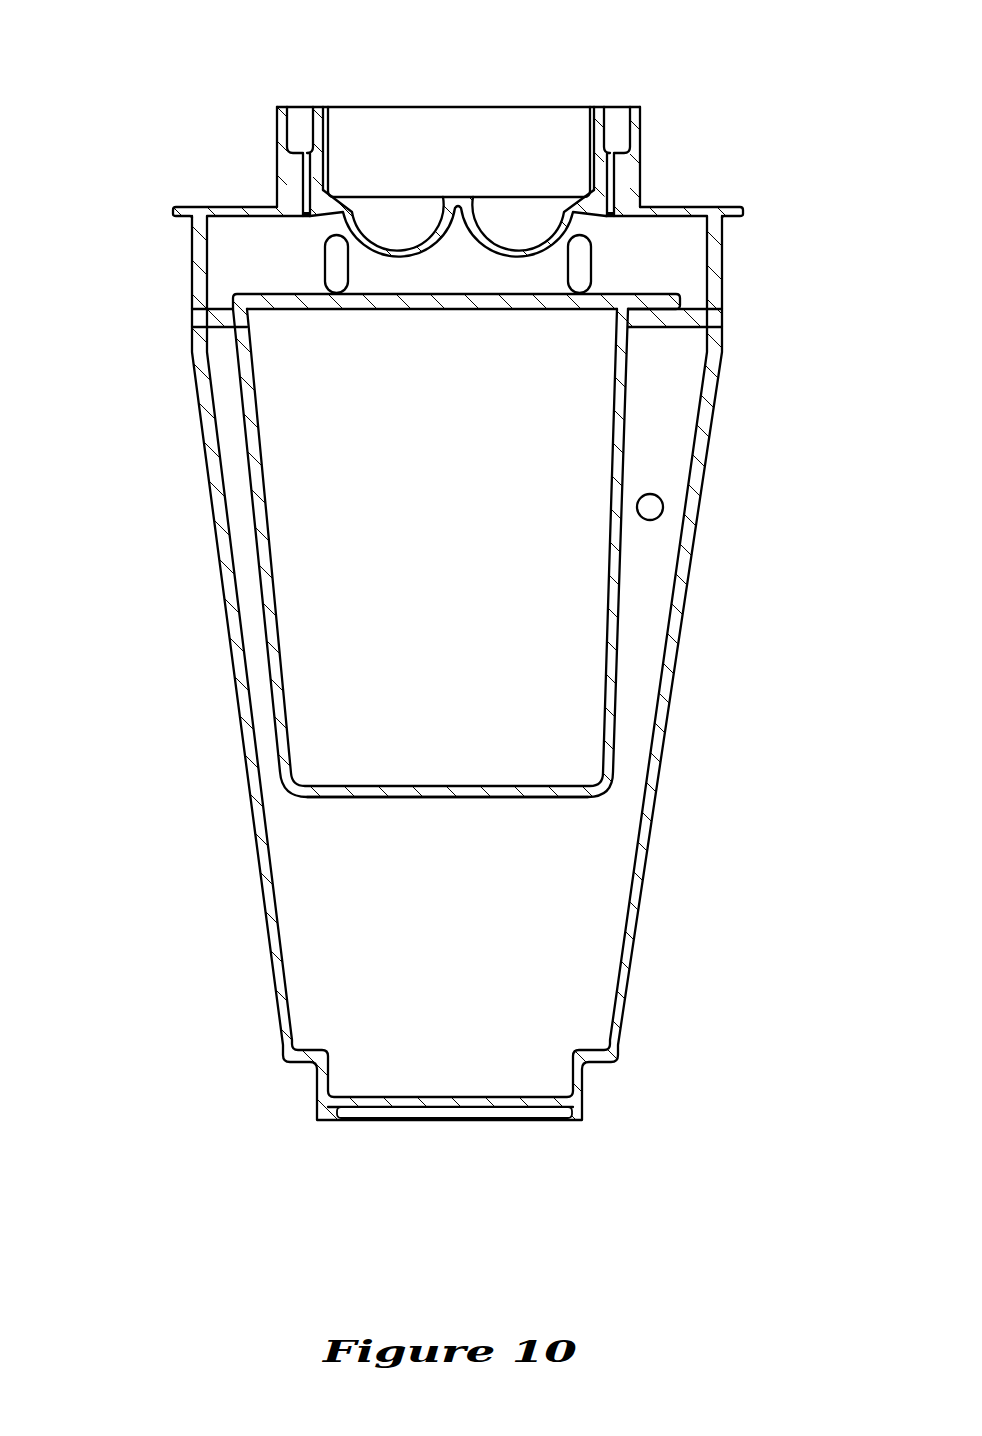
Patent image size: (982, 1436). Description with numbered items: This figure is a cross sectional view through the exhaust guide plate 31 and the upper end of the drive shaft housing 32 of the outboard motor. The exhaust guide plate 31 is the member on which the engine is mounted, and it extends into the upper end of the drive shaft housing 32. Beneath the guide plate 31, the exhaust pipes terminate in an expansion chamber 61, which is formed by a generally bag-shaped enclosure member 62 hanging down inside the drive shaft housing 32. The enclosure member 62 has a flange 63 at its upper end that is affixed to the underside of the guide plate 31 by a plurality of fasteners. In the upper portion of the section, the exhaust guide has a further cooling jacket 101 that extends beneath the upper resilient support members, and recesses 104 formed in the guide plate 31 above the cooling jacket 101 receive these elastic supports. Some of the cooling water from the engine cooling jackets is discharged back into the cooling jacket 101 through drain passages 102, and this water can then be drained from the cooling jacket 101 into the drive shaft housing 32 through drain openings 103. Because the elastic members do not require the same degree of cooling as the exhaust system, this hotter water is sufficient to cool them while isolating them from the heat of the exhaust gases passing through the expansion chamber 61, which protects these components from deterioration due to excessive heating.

The exhaust guide plate 31 is at (208, 201).
The drive shaft housing 32 is at (233, 697).
The expansion chamber 61 is at (515, 758).
The enclosure member 62 is at (372, 798).
The flange 63 is at (248, 254).
The cooling jacket 101 is at (660, 242).
The drain passages 102 is at (298, 115).
The drain openings 103 is at (213, 303).
The recesses 104 is at (505, 210).